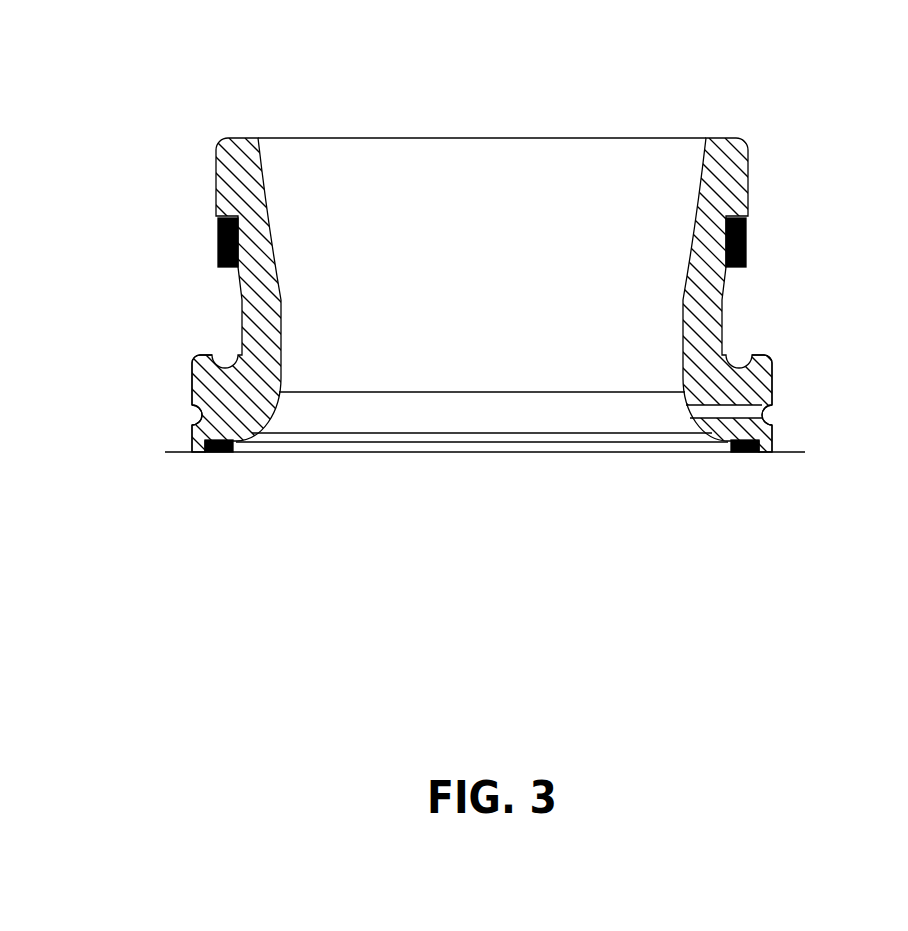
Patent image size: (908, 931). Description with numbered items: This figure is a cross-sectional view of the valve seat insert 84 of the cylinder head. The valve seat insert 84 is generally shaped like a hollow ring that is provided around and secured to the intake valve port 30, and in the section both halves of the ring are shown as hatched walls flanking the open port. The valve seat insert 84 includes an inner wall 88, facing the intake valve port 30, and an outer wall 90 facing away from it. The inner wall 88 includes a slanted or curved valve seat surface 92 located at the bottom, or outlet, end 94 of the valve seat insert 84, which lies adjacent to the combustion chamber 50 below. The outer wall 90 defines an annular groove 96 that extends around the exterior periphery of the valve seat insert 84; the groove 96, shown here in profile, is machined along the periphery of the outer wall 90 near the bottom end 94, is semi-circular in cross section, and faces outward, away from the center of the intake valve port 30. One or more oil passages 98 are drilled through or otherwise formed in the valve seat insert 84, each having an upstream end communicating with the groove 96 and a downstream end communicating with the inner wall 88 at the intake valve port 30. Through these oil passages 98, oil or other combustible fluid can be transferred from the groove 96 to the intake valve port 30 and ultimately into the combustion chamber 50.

The valve seat insert 84 is at (454, 297).
The inner wall 88 is at (268, 195).
The outer wall 90 is at (242, 315).
The valve seat surface 92 is at (230, 402).
The bottom end 94 is at (190, 443).
The annular groove 96 is at (192, 421).
The oil passage 98 is at (747, 415).
The intake valve port 30 is at (503, 276).
The combustion chamber 50 is at (503, 495).